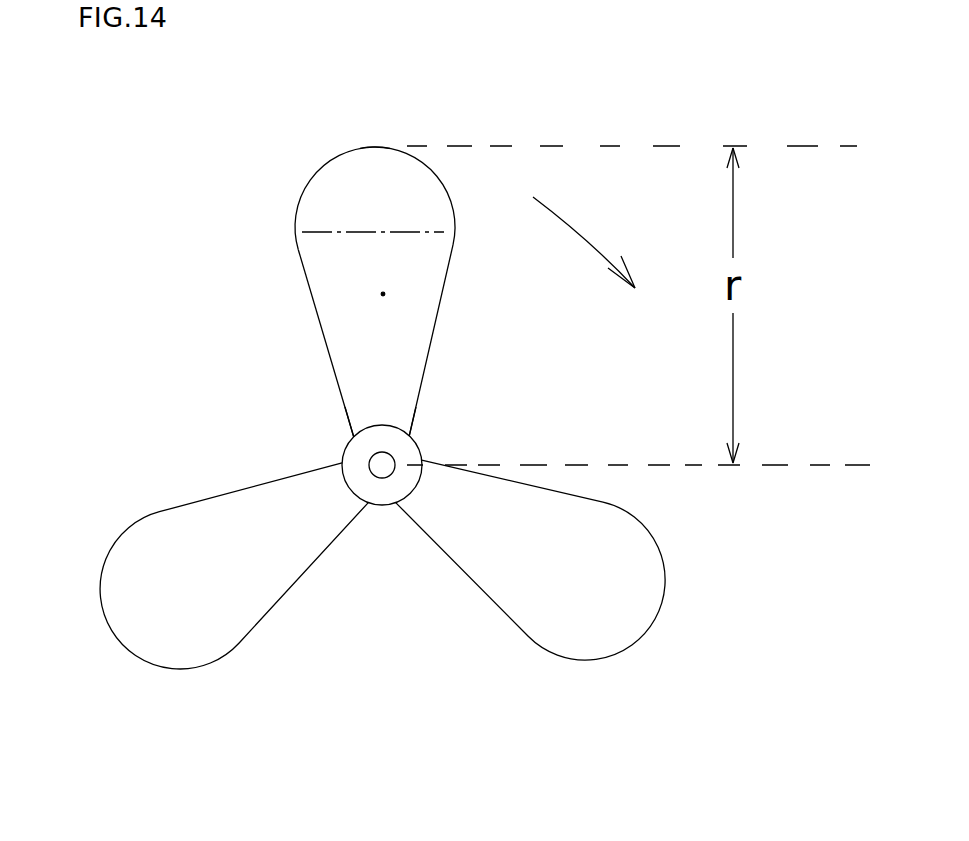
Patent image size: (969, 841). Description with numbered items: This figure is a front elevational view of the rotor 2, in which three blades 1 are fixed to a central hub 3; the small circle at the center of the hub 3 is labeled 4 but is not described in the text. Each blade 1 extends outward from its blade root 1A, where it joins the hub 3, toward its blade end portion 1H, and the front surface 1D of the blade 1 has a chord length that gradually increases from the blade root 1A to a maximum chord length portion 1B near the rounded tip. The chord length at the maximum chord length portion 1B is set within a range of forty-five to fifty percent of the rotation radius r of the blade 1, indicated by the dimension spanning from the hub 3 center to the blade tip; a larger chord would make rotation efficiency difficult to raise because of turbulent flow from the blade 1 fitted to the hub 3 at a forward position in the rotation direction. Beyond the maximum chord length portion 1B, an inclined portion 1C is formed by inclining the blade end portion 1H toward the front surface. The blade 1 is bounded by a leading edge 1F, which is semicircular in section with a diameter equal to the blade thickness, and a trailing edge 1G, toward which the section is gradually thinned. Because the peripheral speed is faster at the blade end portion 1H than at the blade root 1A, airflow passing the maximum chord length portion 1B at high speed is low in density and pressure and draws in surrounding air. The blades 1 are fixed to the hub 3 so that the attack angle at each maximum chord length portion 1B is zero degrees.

The blade 1 is at (407, 257).
The blade root 1A is at (351, 418).
The maximum chord length portion 1B is at (347, 232).
The inclined portion 1C is at (338, 162).
The front surface 1D is at (383, 294).
The leading edge 1F is at (447, 275).
The trailing edge 1G is at (318, 322).
The blade end portion 1H is at (373, 147).
The rotor 2 is at (382, 443).
The hub 3 is at (412, 446).
The rotation shaft center hole 4 is at (383, 468).